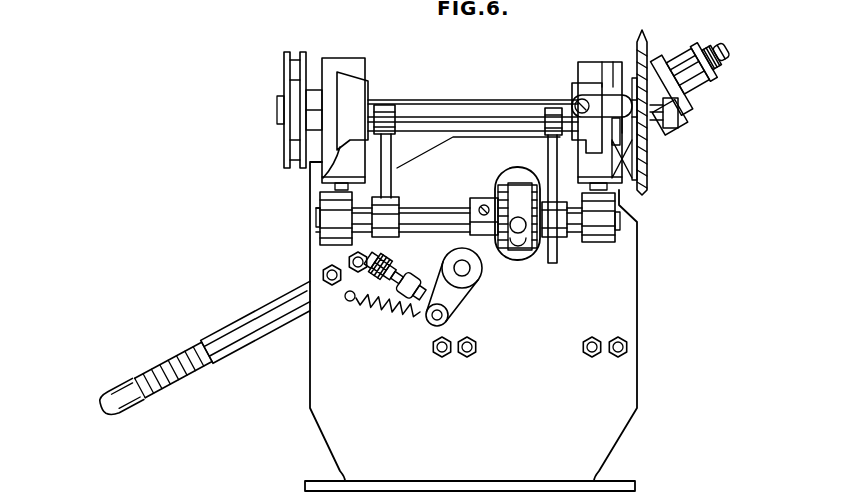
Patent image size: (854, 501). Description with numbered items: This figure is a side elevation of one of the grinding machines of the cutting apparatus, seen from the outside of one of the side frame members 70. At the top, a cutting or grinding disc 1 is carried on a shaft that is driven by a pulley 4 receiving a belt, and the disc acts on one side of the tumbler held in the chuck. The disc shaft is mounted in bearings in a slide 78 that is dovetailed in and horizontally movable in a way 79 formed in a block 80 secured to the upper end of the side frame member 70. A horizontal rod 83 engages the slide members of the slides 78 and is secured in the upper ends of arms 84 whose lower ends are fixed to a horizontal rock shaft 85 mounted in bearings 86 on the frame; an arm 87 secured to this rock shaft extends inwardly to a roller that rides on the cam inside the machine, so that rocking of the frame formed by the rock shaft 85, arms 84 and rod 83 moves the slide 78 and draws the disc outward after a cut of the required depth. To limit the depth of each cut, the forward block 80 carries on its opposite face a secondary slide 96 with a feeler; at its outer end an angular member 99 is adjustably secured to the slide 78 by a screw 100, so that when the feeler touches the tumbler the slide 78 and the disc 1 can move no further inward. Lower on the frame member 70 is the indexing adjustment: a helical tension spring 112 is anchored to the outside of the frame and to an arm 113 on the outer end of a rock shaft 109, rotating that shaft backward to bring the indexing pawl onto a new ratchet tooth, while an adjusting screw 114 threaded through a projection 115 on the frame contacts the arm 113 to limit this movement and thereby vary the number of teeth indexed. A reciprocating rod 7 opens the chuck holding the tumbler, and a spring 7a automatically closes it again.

The cutting or grinding disc 1 is at (648, 45).
The pulley 4 is at (283, 150).
The reciprocating rod 7 is at (123, 397).
The spring 7a is at (172, 368).
The side frame member 70 is at (588, 415).
The slide 78 is at (357, 103).
The way 79 is at (345, 152).
The block 80 is at (367, 62).
The horizontal rod 83 is at (485, 120).
The arm 84 is at (386, 183).
The rock shaft 85 is at (432, 213).
The bearing 86 is at (330, 222).
The arm 87 is at (517, 185).
The secondary slide 96 is at (647, 148).
The angular member 99 is at (618, 115).
The screw 100 is at (572, 100).
The rock shaft 109 is at (470, 272).
The helical tension spring 112 is at (382, 316).
The arm 113 is at (457, 303).
The adjusting screw 114 is at (383, 255).
The projection 115 is at (414, 278).